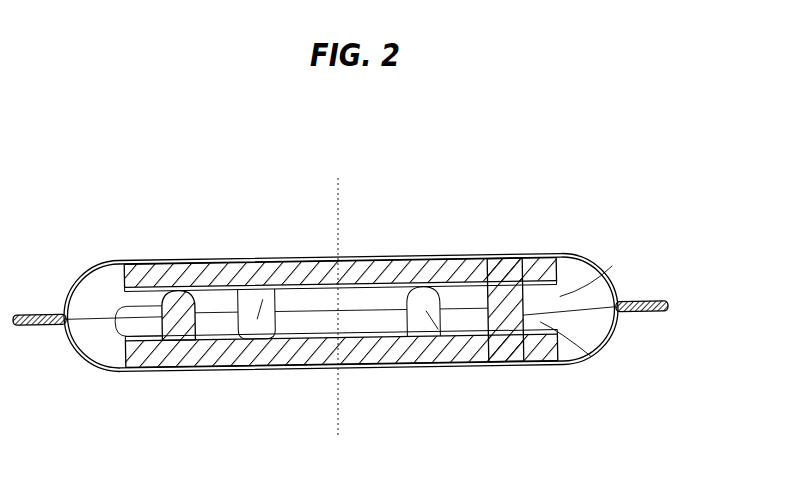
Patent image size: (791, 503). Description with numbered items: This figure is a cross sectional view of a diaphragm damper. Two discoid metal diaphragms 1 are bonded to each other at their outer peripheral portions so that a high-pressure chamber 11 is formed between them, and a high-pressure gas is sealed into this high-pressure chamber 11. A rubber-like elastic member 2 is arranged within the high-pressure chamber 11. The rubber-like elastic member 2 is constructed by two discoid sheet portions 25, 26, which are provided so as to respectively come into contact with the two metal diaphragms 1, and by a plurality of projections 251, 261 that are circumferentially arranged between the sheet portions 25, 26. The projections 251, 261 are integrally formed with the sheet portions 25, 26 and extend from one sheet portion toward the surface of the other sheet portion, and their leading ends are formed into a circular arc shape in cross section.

The discoid metal diaphragm 1 is at (581, 258).
The high-pressure chamber 11 is at (592, 365).
The rubber-like elastic member 2 is at (446, 258).
The discoid sheet portion 25 is at (368, 257).
The projection 251 is at (270, 258).
The discoid sheet portion 26 is at (322, 367).
The projection 261 is at (107, 366).